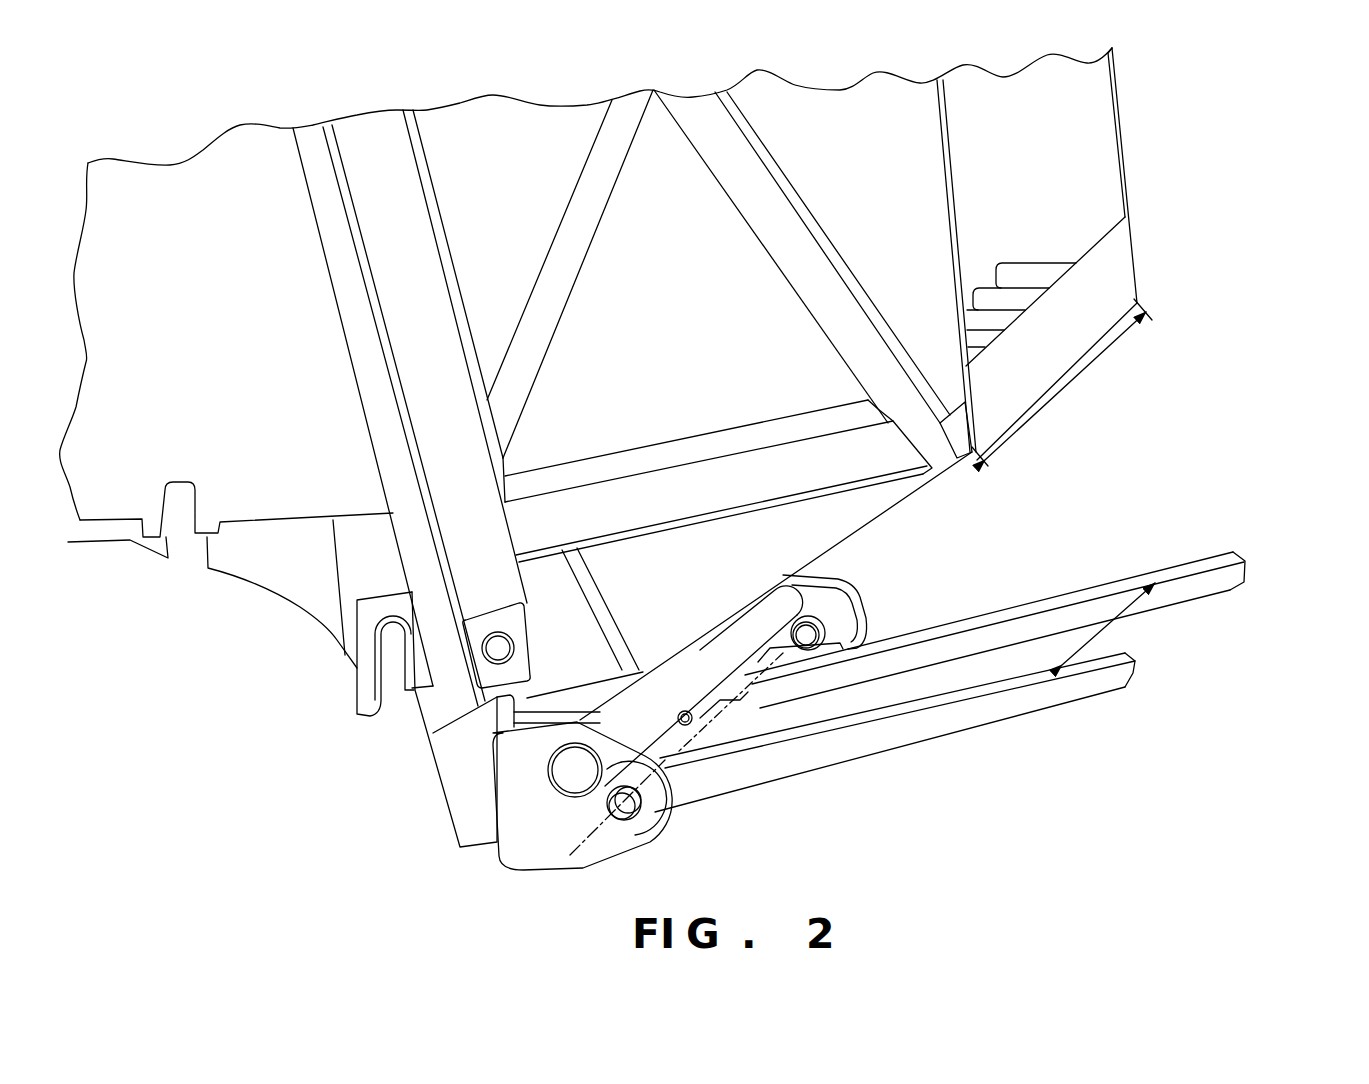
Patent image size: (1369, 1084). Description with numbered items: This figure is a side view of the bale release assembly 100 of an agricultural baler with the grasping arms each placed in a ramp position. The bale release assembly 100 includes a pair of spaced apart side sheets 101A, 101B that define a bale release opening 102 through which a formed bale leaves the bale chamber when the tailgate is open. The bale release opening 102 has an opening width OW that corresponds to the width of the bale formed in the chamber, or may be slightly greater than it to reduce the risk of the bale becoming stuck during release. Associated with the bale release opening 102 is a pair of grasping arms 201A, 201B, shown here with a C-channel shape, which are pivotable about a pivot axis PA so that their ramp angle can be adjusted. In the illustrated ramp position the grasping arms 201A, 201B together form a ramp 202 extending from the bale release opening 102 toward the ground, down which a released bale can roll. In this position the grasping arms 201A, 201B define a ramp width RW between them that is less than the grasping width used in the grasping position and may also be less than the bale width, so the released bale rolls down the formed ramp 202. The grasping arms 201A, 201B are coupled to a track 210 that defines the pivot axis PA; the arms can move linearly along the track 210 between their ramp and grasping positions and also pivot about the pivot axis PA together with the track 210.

The bale release assembly 100 is at (1250, 282).
The side sheet 101A is at (710, 323).
The side sheet 101B is at (1122, 140).
The bale release opening 102 is at (1062, 402).
The opening width OW is at (1082, 375).
The ramp 202 is at (1158, 657).
The grasping arm 201A is at (930, 732).
The grasping arm 201B is at (1087, 593).
The ramp width RW is at (1100, 630).
The track 210 is at (745, 712).
The pivot axis PA is at (600, 828).